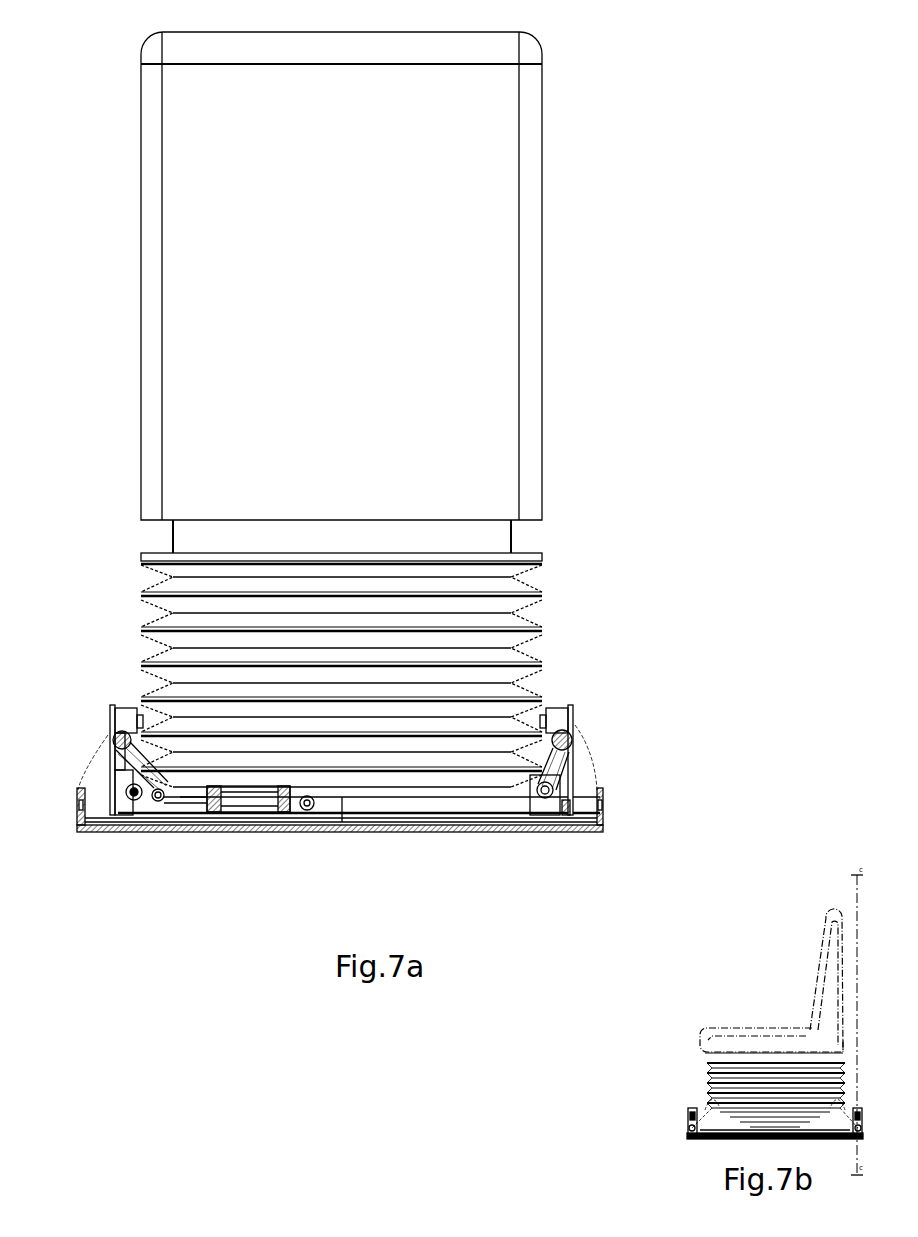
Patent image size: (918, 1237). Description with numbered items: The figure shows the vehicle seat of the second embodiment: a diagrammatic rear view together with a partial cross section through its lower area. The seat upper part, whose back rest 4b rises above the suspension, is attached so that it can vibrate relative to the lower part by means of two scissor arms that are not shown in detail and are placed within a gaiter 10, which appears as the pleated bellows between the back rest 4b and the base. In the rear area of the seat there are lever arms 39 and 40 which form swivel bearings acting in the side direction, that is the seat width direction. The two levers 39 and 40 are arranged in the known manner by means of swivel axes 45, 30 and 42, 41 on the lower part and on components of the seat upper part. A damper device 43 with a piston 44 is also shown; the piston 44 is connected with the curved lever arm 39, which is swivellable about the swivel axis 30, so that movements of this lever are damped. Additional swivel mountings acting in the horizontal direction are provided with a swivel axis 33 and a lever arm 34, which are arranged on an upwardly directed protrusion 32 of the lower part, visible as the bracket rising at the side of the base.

The back rest 4b is at (490, 258).
The gaiter 10 is at (525, 562).
The swivel axis 30 is at (135, 832).
The upwardly directed protrusion 32 is at (573, 720).
The swivel axis 33 is at (575, 712).
The lever arm 34 is at (548, 700).
The lever arm 39 is at (112, 790).
The lever arm 40 is at (600, 795).
The swivel axis 41 is at (552, 832).
The swivel axis 42 is at (580, 728).
The damper device 43 is at (272, 832).
The piston 44 is at (200, 832).
The swivel axis 45 is at (105, 722).